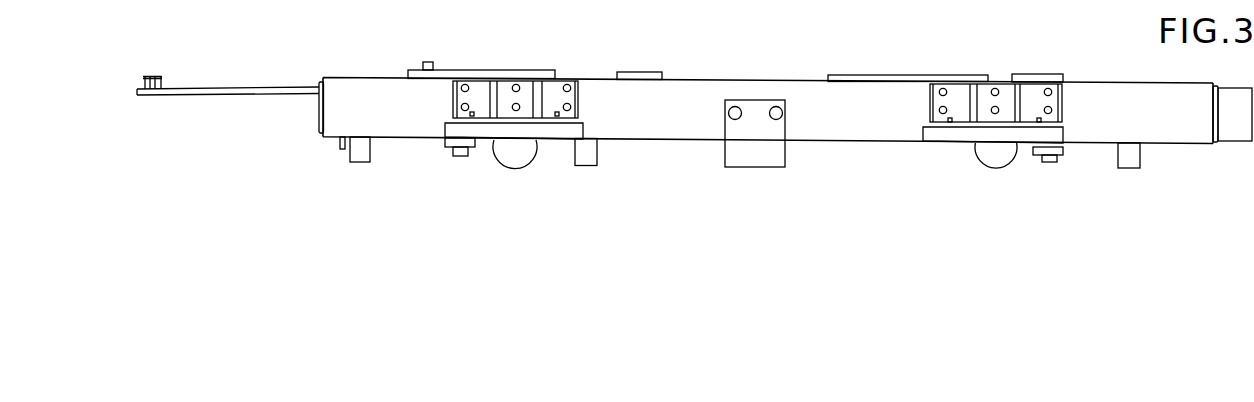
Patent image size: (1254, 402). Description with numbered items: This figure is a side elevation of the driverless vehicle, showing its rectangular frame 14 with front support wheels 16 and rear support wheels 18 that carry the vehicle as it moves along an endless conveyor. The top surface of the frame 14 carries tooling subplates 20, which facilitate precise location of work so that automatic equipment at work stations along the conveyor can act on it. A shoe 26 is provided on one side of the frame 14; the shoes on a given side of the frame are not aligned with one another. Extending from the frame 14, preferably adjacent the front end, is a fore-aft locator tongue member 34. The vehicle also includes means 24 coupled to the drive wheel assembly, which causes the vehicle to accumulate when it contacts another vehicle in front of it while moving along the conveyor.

The rectangular frame 14 is at (810, 93).
The front support wheels 16 is at (518, 145).
The rear support wheels 18 is at (988, 152).
The tooling subplates 20 is at (645, 72).
The means for causing accumulation 24 is at (261, 111).
The shoe 26 is at (1037, 41).
The fore-aft locator tongue member 34 is at (338, 149).